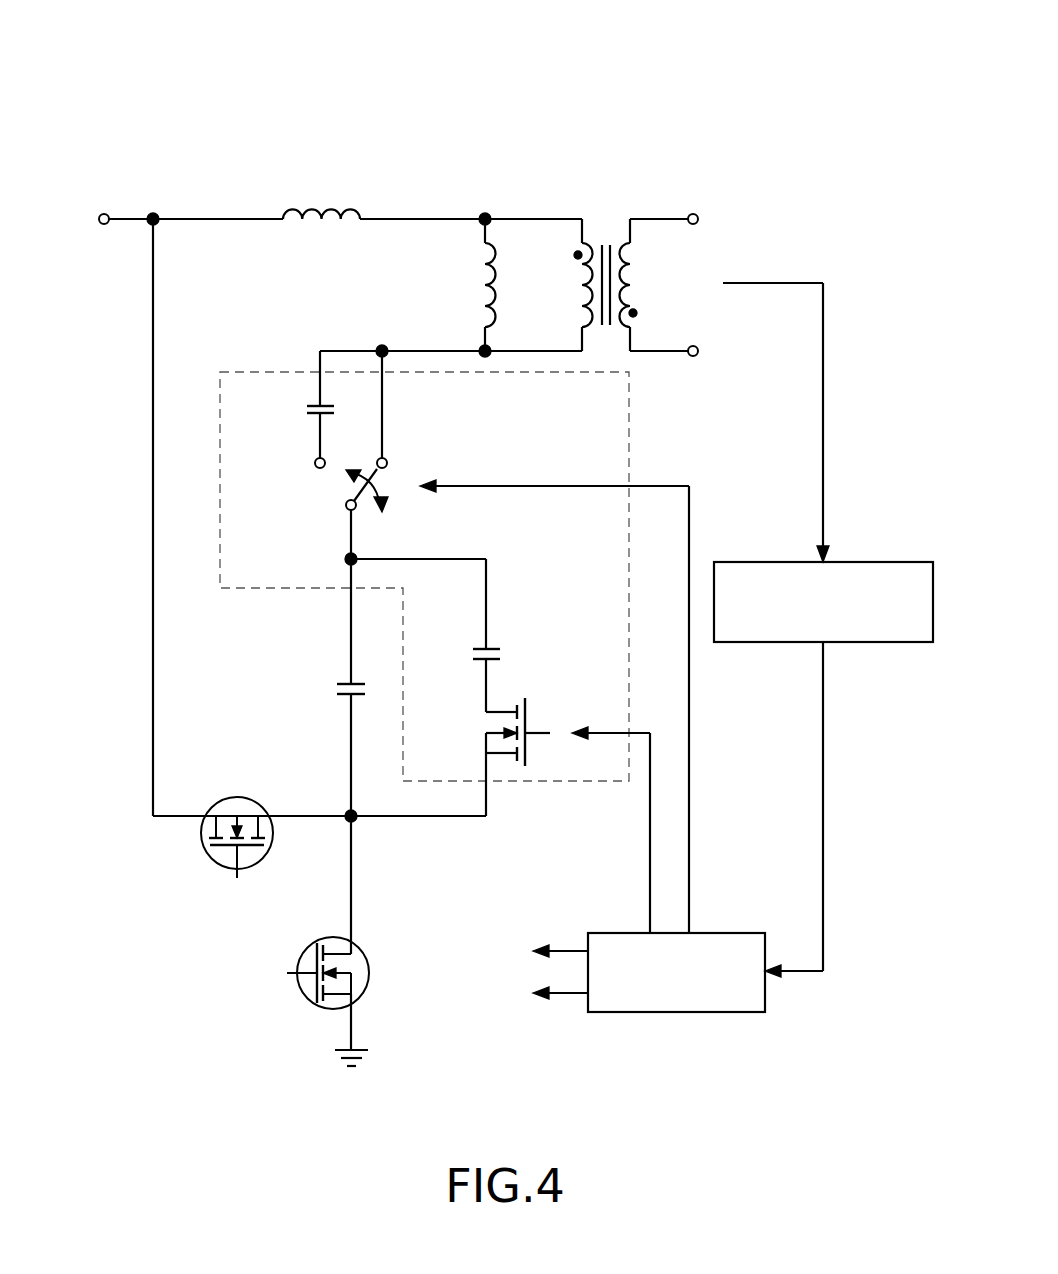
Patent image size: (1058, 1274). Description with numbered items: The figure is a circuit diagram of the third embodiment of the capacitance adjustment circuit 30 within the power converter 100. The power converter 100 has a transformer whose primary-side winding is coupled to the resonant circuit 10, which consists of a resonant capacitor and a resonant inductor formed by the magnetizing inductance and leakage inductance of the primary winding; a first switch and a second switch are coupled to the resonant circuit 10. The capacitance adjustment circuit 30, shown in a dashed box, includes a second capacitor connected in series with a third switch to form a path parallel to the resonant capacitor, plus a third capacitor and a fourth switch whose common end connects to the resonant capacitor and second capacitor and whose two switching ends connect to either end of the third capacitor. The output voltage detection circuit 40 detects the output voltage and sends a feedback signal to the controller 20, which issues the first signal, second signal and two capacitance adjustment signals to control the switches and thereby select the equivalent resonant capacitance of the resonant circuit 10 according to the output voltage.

The power converter 100 is at (398, 35).
The resonant circuit 10 is at (308, 330).
The controller 20 is at (742, 942).
The capacitance adjustment circuit 30 is at (617, 428).
The output voltage detection circuit 40 is at (888, 573).